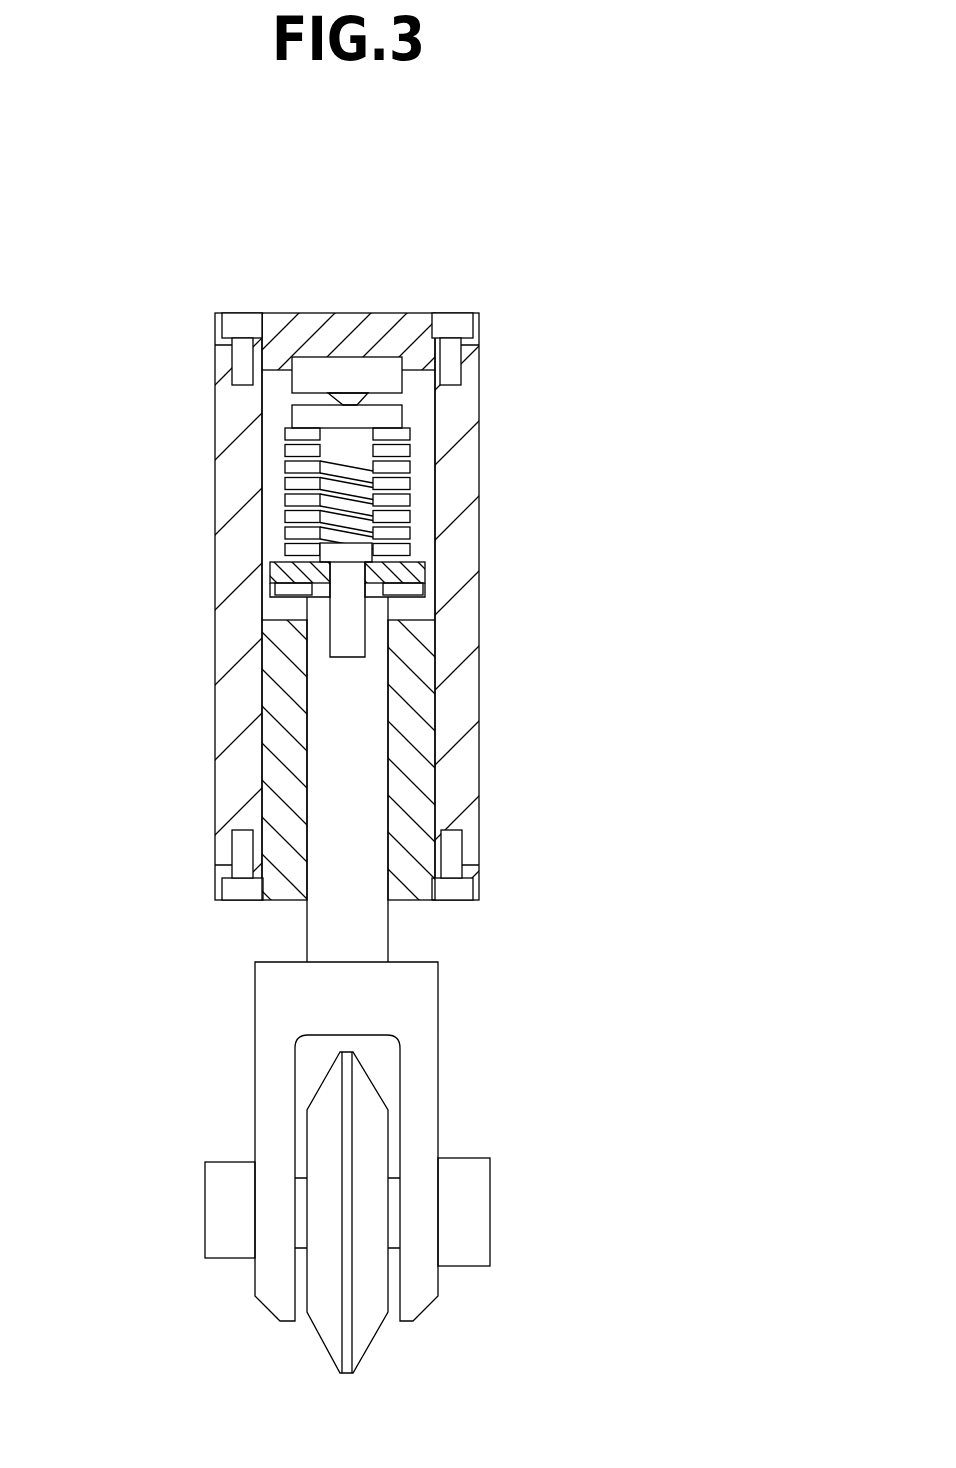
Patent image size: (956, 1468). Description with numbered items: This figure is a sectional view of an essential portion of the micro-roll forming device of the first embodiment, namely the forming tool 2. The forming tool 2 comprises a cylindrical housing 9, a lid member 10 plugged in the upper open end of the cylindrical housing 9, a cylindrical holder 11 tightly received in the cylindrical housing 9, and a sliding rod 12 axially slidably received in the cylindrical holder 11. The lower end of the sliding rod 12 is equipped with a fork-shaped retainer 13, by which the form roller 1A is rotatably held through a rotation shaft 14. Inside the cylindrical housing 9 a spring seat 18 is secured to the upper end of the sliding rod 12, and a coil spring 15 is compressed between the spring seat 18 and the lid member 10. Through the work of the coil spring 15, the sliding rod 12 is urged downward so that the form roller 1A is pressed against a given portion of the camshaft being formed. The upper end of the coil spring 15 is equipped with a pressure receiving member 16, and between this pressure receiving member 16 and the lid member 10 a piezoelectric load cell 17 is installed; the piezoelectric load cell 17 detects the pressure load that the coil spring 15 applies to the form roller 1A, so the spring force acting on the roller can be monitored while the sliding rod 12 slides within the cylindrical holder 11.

The forming tool 2 is at (343, 554).
The cylindrical housing 9 is at (462, 487).
The lid member 10 is at (373, 327).
The piezoelectric load cell 17 is at (315, 372).
The pressure receiving member 16 is at (390, 418).
The coil spring 15 is at (283, 467).
The spring seat 18 is at (433, 568).
The cylindrical holder 11 is at (283, 658).
The sliding rod 12 is at (368, 783).
The fork-shaped retainer 13 is at (423, 1005).
The rotation shaft 14 is at (475, 1185).
The form roller 1A is at (362, 1333).